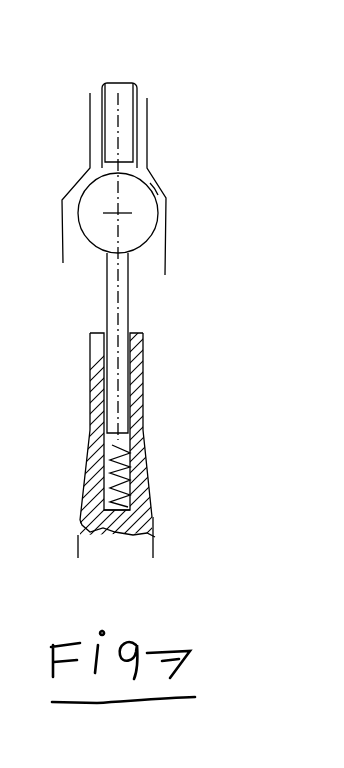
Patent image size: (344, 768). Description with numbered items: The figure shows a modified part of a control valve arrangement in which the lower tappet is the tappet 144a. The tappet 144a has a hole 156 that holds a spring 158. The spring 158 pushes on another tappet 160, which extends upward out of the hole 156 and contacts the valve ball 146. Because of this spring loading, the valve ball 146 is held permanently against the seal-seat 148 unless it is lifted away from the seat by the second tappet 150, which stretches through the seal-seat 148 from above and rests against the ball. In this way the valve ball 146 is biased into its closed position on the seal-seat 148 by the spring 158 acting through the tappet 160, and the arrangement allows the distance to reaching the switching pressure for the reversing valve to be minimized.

The tappet 144a is at (146, 396).
The valve ball 146 is at (140, 228).
The seal-seat 148 is at (159, 191).
The second tappet 150 is at (130, 91).
The hole 156 is at (127, 453).
The spring 158 is at (137, 487).
The tappet 160 is at (118, 315).